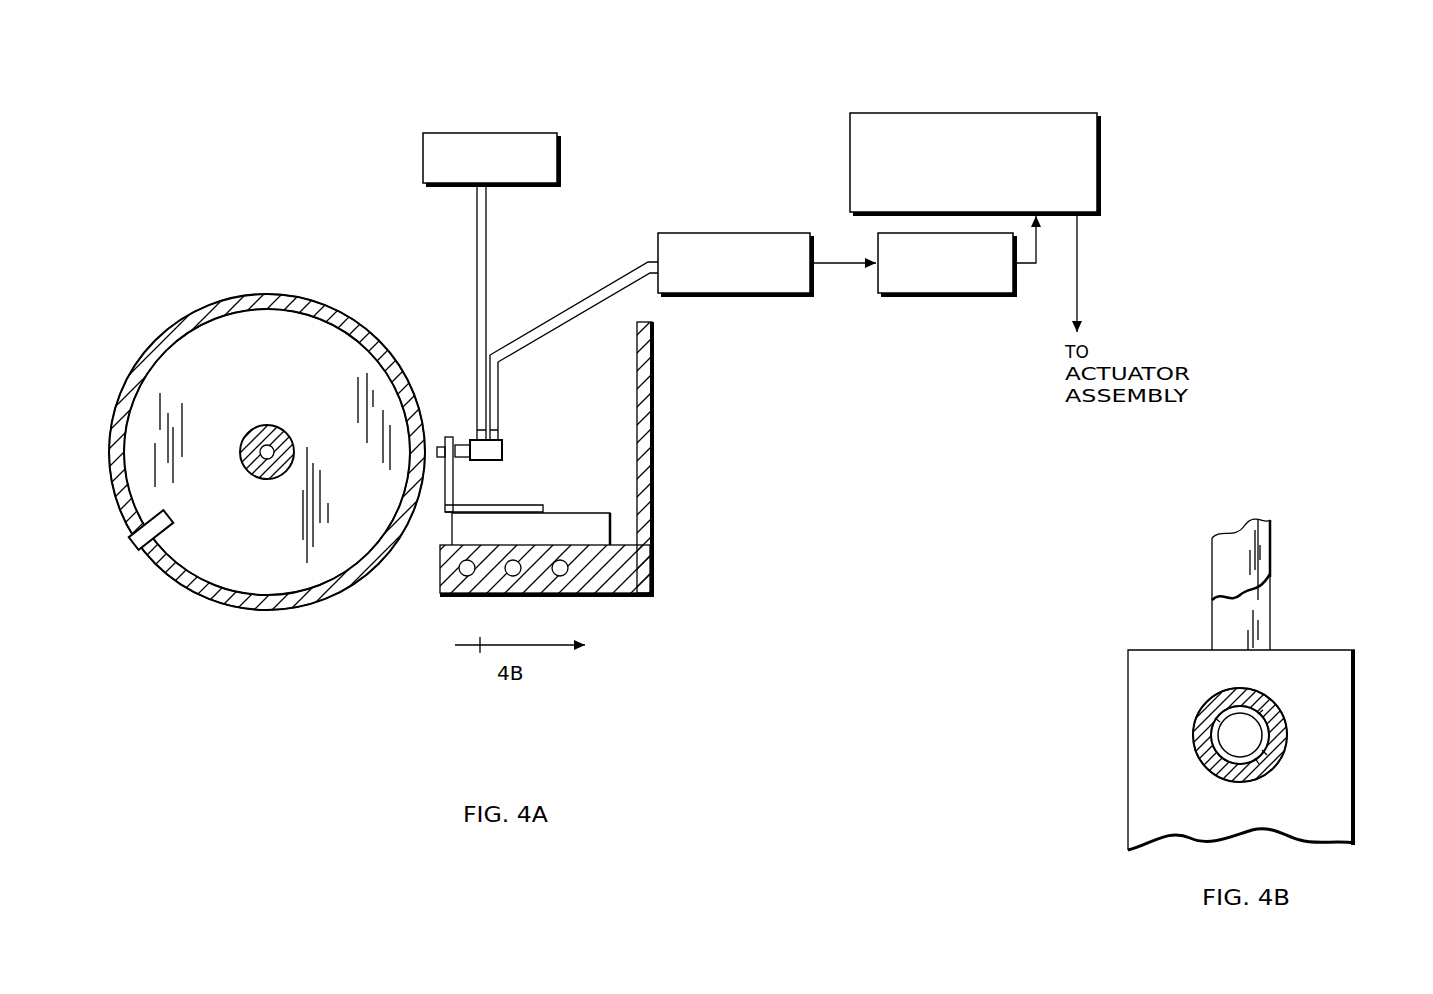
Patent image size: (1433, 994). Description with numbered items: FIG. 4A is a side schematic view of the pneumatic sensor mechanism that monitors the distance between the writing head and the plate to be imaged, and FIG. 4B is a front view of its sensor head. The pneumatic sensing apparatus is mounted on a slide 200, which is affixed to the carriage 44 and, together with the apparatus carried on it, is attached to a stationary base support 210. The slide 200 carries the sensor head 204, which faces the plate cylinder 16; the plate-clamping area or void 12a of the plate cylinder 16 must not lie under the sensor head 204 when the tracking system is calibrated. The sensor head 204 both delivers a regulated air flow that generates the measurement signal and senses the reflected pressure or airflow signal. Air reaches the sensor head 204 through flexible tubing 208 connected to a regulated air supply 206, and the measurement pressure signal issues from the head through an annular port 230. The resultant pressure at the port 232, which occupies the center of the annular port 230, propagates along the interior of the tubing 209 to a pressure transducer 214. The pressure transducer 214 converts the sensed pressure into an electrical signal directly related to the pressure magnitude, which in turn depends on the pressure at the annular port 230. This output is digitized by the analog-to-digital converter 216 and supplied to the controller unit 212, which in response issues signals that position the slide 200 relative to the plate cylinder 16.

In FIG. 4A, the plate cylinder 16 is at (264, 338).
In FIG. 4A, the plate-clamping area 12a is at (129, 541).
In FIG. 4A, the sensor head 204 is at (445, 440).
In FIG. 4B, the sensor head 204 is at (1237, 744).
In FIG. 4A, the slide 200 is at (443, 506).
In FIG. 4B, the slide 200 is at (1328, 823).
In FIG. 4A, the base support 210 is at (592, 533).
In FIG. 4A, the carriage 44 is at (657, 530).
In FIG. 4A, the air supply 206 is at (524, 133).
In FIG. 4A, the flexible tubing 208 is at (488, 246).
In FIG. 4B, the flexible tubing 208 is at (1222, 620).
In FIG. 4A, the tubing 209 is at (599, 290).
In FIG. 4B, the tubing 209 is at (1228, 561).
In FIG. 4A, the pressure transducer 214 is at (703, 298).
In FIG. 4A, the analog-to-digital converter 216 is at (903, 298).
In FIG. 4A, the controller unit 212 is at (989, 114).
In FIG. 4B, the port 232 is at (1280, 714).
In FIG. 4B, the annular port 230 is at (1275, 733).